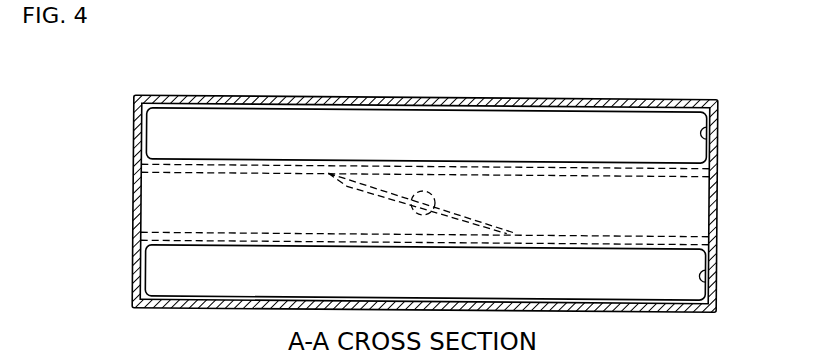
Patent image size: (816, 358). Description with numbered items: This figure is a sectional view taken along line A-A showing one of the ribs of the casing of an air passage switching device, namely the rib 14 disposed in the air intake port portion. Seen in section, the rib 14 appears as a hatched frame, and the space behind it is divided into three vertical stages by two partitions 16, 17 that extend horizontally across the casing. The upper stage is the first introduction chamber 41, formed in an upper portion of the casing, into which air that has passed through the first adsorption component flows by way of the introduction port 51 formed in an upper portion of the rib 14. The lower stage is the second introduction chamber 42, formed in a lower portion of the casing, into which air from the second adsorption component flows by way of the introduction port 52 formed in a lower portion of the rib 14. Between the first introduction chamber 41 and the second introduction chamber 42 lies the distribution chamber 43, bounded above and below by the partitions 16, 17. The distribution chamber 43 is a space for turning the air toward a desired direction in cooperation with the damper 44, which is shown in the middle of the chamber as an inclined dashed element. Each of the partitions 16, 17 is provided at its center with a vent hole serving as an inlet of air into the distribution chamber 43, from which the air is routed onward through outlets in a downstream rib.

The rib 14 is at (136, 132).
The partition 16 is at (187, 175).
The partition 17 is at (192, 234).
The first introduction chamber 41 is at (647, 128).
The second introduction chamber 42 is at (623, 278).
The distribution chamber 43 is at (423, 205).
The damper 44 is at (392, 190).
The introduction port 51 is at (704, 133).
The introduction port 52 is at (704, 276).